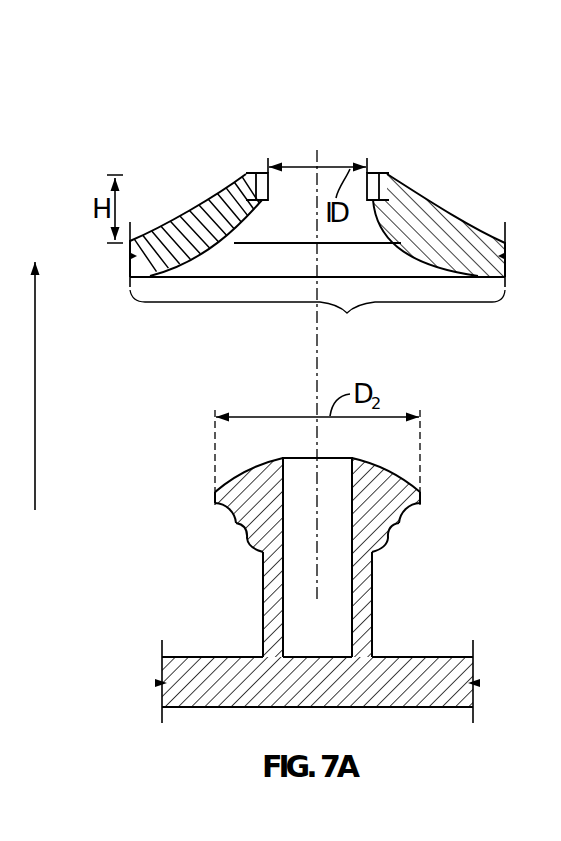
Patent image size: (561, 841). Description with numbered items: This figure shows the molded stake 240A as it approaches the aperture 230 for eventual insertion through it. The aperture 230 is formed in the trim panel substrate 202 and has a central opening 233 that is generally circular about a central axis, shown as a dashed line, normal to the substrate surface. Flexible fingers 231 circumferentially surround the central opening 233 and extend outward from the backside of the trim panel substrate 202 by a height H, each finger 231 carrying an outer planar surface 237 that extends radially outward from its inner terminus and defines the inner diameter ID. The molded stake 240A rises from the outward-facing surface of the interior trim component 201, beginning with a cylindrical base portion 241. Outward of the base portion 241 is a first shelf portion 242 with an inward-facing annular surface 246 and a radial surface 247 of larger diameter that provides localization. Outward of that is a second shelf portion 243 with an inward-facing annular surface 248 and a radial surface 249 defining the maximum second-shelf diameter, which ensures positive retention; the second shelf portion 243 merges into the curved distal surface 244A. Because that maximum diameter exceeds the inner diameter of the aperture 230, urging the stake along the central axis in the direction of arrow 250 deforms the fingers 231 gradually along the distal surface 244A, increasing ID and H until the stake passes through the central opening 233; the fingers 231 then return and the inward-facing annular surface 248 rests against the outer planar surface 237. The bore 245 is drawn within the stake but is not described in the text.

The central opening 233 is at (293, 146).
The finger 231 is at (203, 224).
The outer planar surface 237 is at (253, 172).
The trim panel substrate 202 is at (305, 271).
The aperture 230 is at (317, 318).
The arrow 250 is at (37, 368).
The molded stake 240A is at (407, 394).
The distal surface 244A is at (250, 468).
The radial surface 249 is at (215, 505).
The inward-facing annular surface 248 is at (227, 512).
The radial surface 247 is at (242, 534).
The first shelf portion 242 is at (250, 558).
The second shelf portion 243 is at (410, 525).
The inward-facing annular surface 246 is at (384, 543).
The cylindrical base portion 241 is at (373, 630).
The bore 245 is at (340, 475).
The interior trim component 201 is at (341, 695).